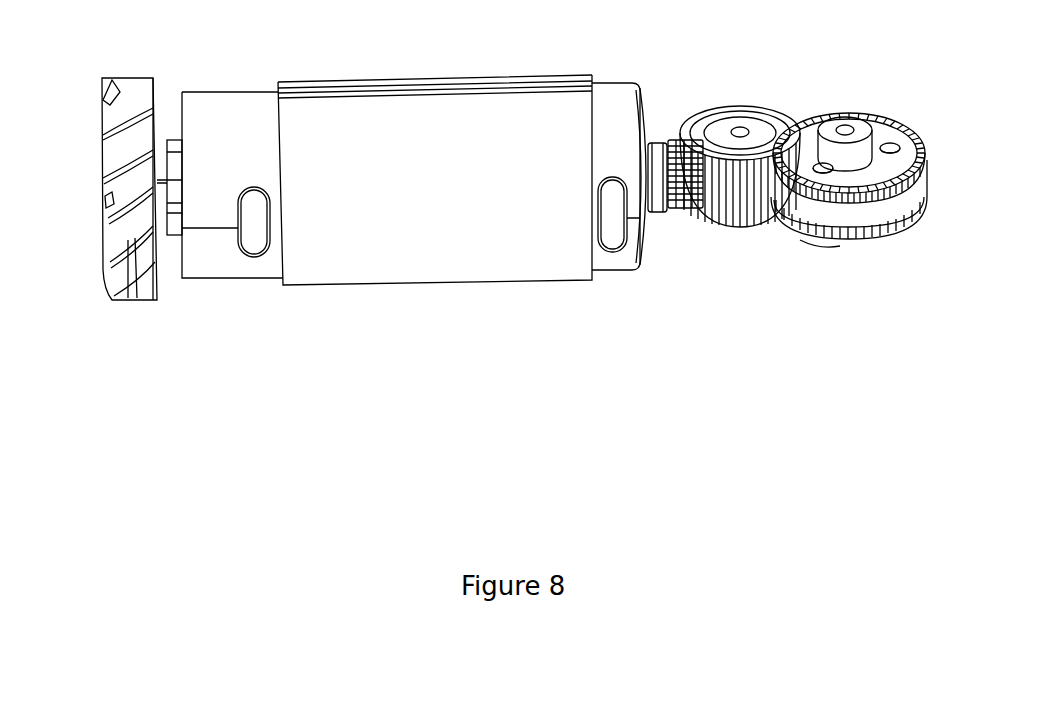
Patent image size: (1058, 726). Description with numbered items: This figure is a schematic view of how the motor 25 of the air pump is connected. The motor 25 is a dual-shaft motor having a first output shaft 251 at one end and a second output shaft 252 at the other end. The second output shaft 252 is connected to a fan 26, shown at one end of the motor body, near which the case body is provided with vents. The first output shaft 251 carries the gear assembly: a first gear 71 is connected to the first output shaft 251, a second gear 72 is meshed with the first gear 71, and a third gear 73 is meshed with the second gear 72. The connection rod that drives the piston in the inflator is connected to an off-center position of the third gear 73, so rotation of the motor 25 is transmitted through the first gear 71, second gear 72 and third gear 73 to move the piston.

The motor 25 is at (448, 257).
The first output shaft 251 is at (677, 207).
The second output shaft 252 is at (168, 195).
The fan 26 is at (133, 98).
The first gear 71 is at (680, 143).
The second gear 72 is at (765, 108).
The third gear 73 is at (903, 123).